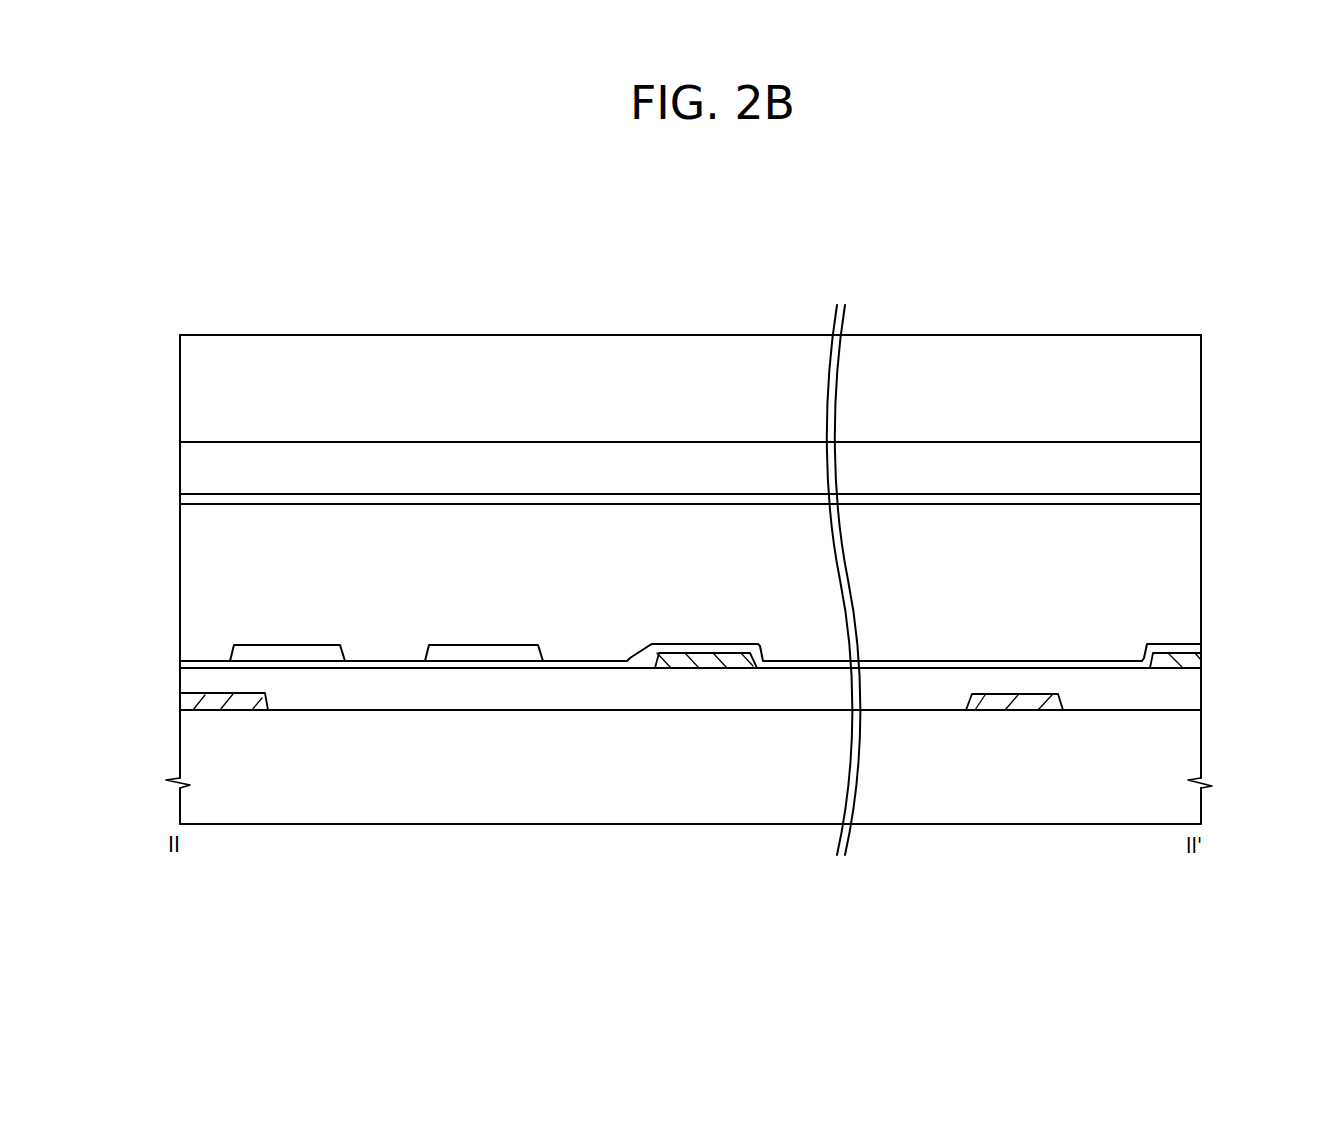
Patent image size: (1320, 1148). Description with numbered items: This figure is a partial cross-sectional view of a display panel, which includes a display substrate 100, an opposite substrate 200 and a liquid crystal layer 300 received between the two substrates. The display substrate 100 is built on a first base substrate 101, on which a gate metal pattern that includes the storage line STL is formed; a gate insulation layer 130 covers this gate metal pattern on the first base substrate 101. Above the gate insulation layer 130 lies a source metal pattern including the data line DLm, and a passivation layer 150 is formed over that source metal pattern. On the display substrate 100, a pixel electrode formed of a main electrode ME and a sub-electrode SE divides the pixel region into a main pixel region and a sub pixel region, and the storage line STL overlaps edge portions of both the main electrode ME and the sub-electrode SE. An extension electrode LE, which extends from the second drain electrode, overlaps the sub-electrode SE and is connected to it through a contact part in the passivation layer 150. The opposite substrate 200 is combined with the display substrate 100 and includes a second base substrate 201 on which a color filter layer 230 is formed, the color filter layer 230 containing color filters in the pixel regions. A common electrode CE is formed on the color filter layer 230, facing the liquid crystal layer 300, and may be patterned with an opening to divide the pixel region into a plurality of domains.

The opposite substrate 200 is at (171, 336).
The second base substrate 201 is at (1193, 388).
The color filter layer 230 is at (1193, 467).
The common electrode CE is at (1193, 500).
The liquid crystal layer 300 is at (171, 504).
The main electrode ME is at (278, 652).
The sub-electrode SE is at (479, 652).
The extension electrode LE is at (695, 660).
The passivation layer 150 is at (1193, 648).
The data line DLm is at (1193, 662).
The gate insulation layer 130 is at (1193, 693).
The display substrate 100 is at (171, 641).
The first base substrate 101 is at (1193, 802).
The storage line STL is at (228, 708).